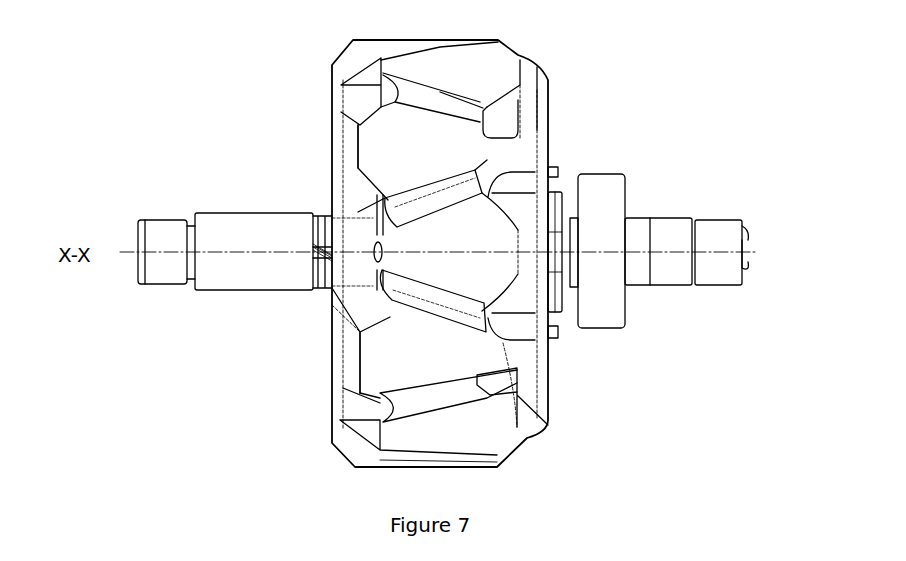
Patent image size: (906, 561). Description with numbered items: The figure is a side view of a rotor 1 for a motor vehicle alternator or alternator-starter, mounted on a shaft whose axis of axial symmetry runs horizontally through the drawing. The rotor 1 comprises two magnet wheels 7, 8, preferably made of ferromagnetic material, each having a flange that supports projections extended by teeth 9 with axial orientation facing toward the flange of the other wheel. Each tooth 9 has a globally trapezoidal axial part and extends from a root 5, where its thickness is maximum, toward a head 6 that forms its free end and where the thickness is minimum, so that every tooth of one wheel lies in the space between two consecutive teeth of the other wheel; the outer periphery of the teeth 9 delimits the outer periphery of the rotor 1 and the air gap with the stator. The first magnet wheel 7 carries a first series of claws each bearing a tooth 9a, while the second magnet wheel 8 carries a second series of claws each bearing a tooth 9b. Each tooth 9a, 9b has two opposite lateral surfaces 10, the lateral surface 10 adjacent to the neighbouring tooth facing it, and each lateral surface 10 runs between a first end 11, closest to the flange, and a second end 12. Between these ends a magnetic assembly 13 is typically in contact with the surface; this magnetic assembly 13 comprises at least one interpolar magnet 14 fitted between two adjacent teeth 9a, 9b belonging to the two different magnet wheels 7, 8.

The rotor 1 is at (262, 150).
The root 5 is at (357, 153).
The head 6 is at (497, 173).
The first magnet wheel 7 is at (537, 47).
The second magnet wheel 8 is at (327, 473).
The teeth 9 is at (445, 249).
The tooth of the first magnet wheel 9a is at (493, 282).
The tooth of the second magnet wheel 9b is at (382, 358).
The lateral surface 10 is at (412, 306).
The first end 11 is at (553, 172).
The second end 12 is at (380, 227).
The magnetic assembly 13 is at (435, 303).
The interpolar magnet 14 is at (448, 396).